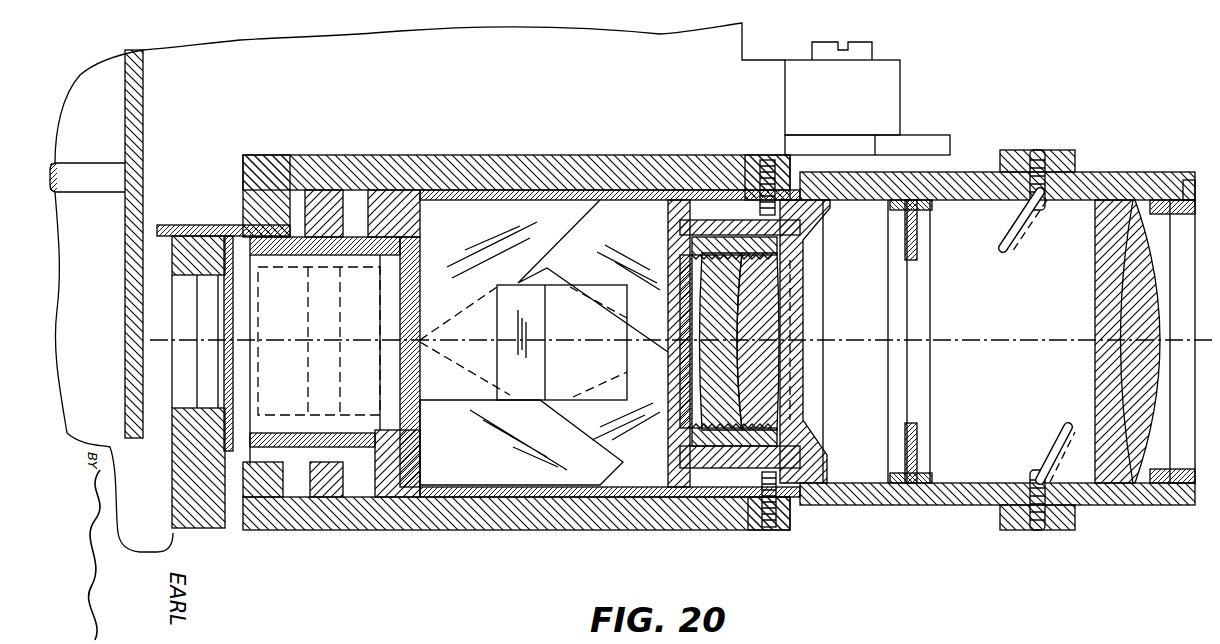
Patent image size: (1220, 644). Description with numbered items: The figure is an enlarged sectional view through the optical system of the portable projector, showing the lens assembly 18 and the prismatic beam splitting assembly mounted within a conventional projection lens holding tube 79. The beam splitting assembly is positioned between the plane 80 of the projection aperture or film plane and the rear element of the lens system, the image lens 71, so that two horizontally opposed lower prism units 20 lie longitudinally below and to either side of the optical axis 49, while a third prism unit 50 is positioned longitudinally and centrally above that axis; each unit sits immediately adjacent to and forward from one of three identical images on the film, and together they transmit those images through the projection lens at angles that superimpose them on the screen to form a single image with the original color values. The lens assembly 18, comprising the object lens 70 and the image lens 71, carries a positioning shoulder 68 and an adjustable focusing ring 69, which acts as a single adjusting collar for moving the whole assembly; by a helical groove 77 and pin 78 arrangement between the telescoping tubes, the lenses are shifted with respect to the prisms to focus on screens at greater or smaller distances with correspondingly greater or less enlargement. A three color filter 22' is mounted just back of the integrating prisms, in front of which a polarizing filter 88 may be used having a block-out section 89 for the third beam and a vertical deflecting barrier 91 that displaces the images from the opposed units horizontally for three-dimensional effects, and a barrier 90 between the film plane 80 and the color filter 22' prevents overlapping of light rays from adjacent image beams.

The lens assembly 18 is at (945, 500).
The prism unit 20 is at (565, 207).
The three color filter 22' is at (544, 300).
The optical axis 49 is at (1027, 340).
The third prism unit 50 is at (455, 388).
The positioning shoulder 68 is at (793, 163).
The adjustable focusing ring 69 is at (1045, 150).
The object lens 70 is at (1158, 262).
The image lens 71 is at (690, 462).
The helical groove 77 is at (1012, 238).
The pin 78 is at (1040, 208).
The projection lens holding tube 79 is at (515, 190).
The film plane 80 is at (230, 324).
The polarizing filter 88 is at (685, 403).
The block-out section 89 is at (685, 315).
The barrier 90 is at (357, 417).
The vertical deflecting barrier 91 is at (679, 343).